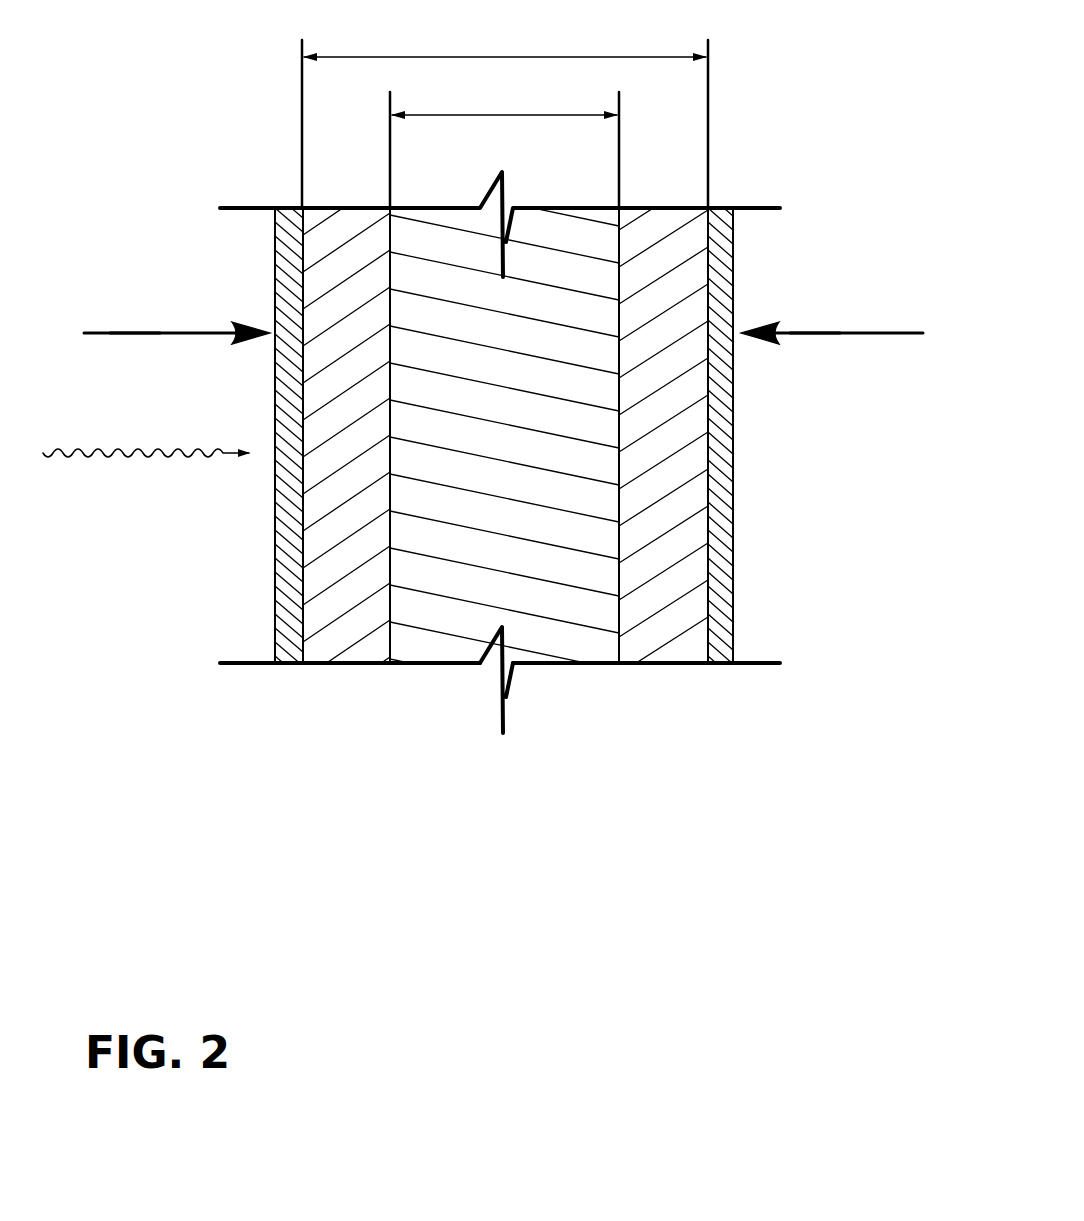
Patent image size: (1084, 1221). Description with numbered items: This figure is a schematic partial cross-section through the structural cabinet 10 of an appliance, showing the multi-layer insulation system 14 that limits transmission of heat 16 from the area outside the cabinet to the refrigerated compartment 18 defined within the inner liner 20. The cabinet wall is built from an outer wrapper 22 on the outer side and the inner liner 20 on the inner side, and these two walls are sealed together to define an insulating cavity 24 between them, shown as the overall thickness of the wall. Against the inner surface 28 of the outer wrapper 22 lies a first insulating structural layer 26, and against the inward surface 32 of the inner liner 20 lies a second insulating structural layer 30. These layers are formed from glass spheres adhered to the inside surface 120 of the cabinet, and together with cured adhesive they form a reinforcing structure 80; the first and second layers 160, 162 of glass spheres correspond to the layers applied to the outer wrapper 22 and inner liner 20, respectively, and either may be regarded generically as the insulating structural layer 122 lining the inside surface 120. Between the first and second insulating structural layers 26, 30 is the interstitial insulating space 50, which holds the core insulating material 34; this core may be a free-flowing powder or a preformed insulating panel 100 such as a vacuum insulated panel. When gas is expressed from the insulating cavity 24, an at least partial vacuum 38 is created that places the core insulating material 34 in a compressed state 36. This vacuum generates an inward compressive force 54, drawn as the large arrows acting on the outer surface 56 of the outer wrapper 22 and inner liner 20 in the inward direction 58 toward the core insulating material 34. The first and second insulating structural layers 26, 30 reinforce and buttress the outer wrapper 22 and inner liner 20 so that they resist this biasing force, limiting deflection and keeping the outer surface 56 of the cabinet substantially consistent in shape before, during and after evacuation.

The structural cabinet 10 is at (195, 178).
The multi-layer insulation system 14 is at (575, 191).
The heat 16 is at (117, 448).
The refrigerated compartment 18 is at (852, 437).
The inner liner 20 is at (721, 257).
The outer wrapper 22 is at (282, 292).
The insulating cavity 24 is at (446, 54).
The first insulating structural layer 26 is at (325, 542).
The inner surface 28 is at (312, 500).
The second insulating structural layer 30 is at (680, 486).
The inward surface 32 is at (698, 536).
The core insulating material 34 is at (448, 256).
The compressed state 36 is at (437, 665).
The at least partial vacuum 38 is at (401, 664).
The interstitial insulating space 50 is at (508, 112).
The inward compressive force 54 is at (116, 331).
The outer surface 56 is at (275, 606).
The inward direction 58 is at (138, 338).
The reinforcing structure 80 is at (657, 666).
The insulating panel 100 is at (568, 641).
The inside surface 120 is at (312, 253).
The insulating structural layer 122 is at (342, 246).
The first layer of glass spheres 160 is at (336, 644).
The second layer of glass spheres 162 is at (675, 634).